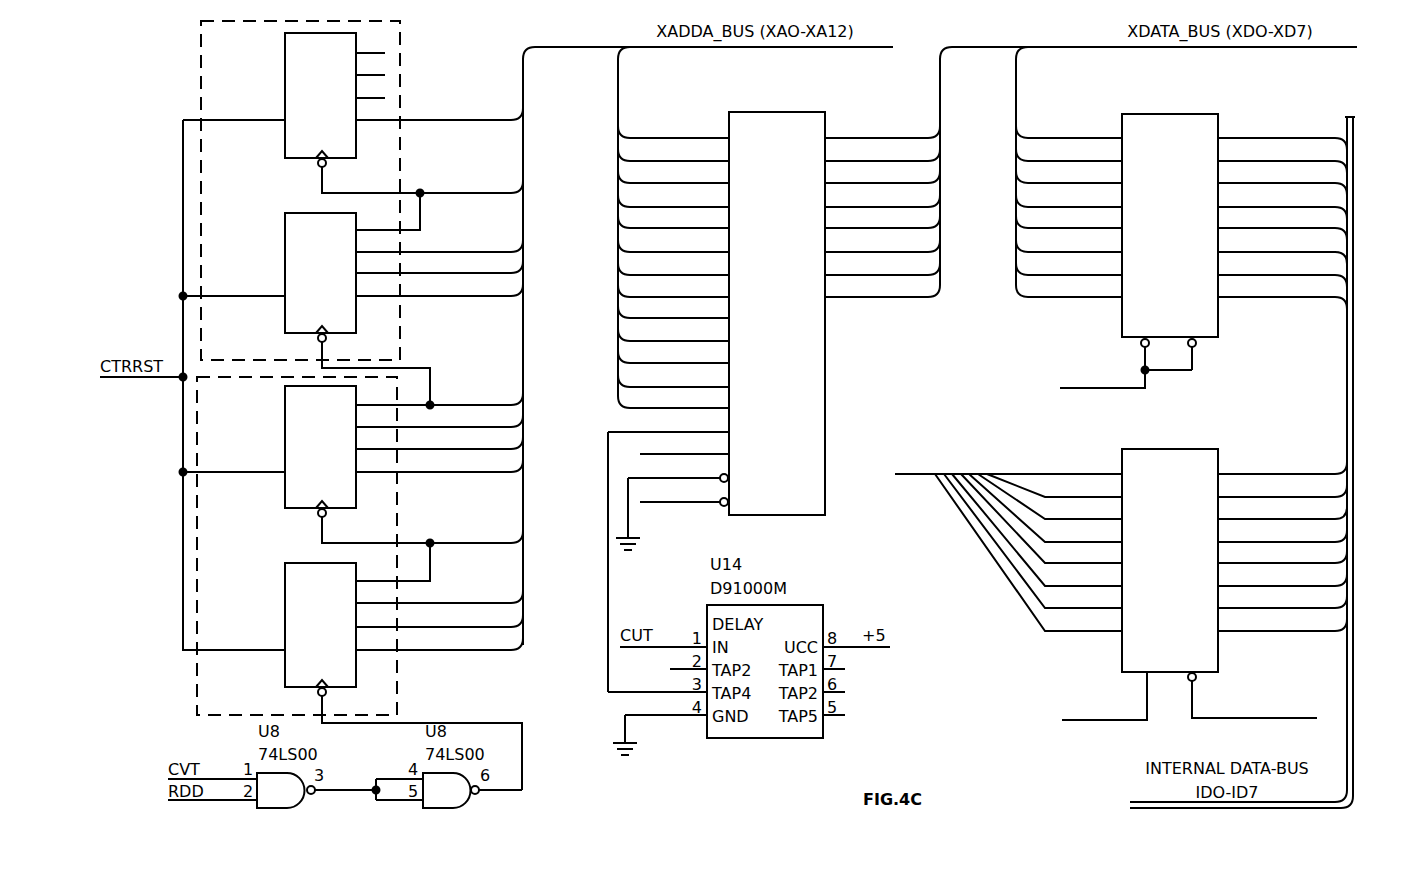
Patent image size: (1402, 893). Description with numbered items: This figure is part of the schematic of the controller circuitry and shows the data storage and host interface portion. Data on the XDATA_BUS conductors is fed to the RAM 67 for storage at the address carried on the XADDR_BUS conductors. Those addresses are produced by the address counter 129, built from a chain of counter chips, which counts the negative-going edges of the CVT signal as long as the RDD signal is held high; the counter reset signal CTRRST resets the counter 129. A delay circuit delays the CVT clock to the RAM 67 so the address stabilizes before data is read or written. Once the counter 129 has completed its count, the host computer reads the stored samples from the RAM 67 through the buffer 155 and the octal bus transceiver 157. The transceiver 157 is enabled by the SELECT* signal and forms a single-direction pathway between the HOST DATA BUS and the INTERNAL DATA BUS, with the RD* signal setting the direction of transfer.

The address counter 129 is at (165, 180).
The RAM 67 is at (822, 112).
The buffer 155 is at (1212, 114).
The octal bus transceiver 157 is at (1212, 449).